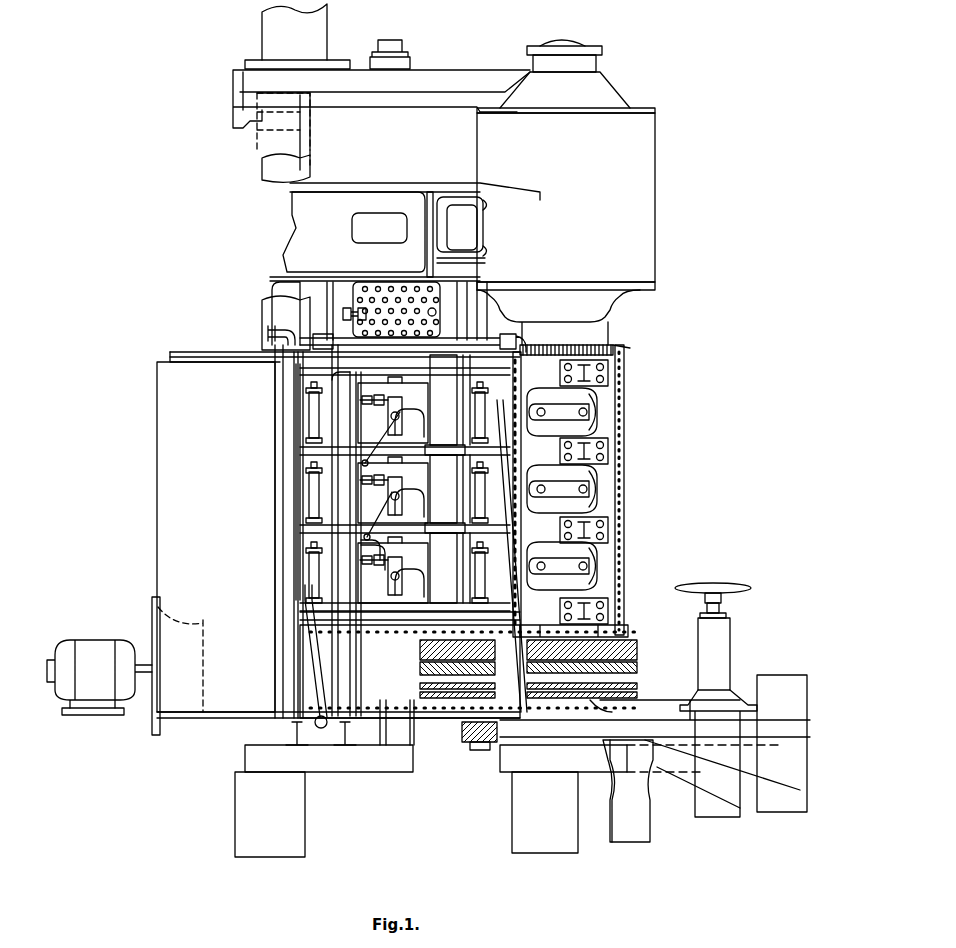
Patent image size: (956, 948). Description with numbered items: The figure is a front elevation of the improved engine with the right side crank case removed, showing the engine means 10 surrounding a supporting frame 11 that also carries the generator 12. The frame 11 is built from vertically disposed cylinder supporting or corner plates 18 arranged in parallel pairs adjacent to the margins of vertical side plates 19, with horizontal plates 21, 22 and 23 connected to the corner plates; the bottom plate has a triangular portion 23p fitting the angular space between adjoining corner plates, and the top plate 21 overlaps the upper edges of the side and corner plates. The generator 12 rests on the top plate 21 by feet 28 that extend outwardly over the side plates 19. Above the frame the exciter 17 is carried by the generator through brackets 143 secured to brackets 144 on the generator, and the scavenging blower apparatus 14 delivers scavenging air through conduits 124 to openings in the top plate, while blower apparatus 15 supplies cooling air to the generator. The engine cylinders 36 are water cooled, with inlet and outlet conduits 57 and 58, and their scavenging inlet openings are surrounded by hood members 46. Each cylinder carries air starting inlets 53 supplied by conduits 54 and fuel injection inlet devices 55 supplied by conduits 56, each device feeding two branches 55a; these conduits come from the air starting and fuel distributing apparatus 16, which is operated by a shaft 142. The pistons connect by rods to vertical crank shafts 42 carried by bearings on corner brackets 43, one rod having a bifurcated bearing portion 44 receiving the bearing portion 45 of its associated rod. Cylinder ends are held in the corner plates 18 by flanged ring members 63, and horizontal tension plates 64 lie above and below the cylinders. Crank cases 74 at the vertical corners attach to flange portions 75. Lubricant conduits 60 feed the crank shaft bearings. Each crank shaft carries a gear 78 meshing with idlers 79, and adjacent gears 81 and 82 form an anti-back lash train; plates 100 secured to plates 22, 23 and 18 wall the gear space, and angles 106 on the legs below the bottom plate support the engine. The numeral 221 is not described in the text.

The engine means 10 is at (378, 589).
The supporting frame 11 is at (462, 460).
The generator 12 is at (300, 256).
The scavenging blower apparatus 14 is at (392, 144).
The blower apparatus 15 is at (116, 744).
The air starting and fuel distributing apparatus 16 is at (774, 836).
The exciter 17 is at (570, 209).
The cylinder supporting or corner plates 18 is at (522, 347).
The side plates 19 is at (407, 354).
The top plate 21 is at (618, 350).
The horizontal plate 22 is at (418, 630).
The bottom plate 23 is at (416, 700).
The triangular portion 23p is at (612, 712).
The feet 28 is at (252, 343).
The engine cylinders 36 is at (393, 421).
The vertical crank shafts 42 is at (580, 397).
The corner brackets or supports 43 is at (598, 447).
The bifurcated bearing portion 44 is at (605, 548).
The bearing portion 45 is at (600, 566).
The hood or housing members 46 is at (330, 492).
The air starting inlets 53 is at (390, 496).
The conduits 54 is at (392, 511).
The fuel injection inlet devices 55 is at (384, 477).
The branches 55a is at (404, 472).
The conduits 56 is at (350, 668).
The inlet conduit 57 is at (298, 585).
The outlet conduit 58 is at (500, 528).
The lubricant conduits 60 is at (465, 344).
The flanged ring members 63 is at (298, 392).
The horizontal tension plates 64 is at (396, 380).
The crank cases 74 is at (178, 468).
The flange portions 75 is at (290, 490).
The gear 78 is at (636, 662).
The idlers 79 is at (445, 690).
The gear 81 is at (637, 684).
The gear 82 is at (437, 700).
The plates 100 is at (376, 700).
The angles 106 is at (296, 733).
The conduits 124 is at (265, 140).
The shaft 142 is at (664, 725).
The brackets 143 is at (452, 210).
The brackets 144 is at (413, 207).
The bar 221 is at (618, 632).